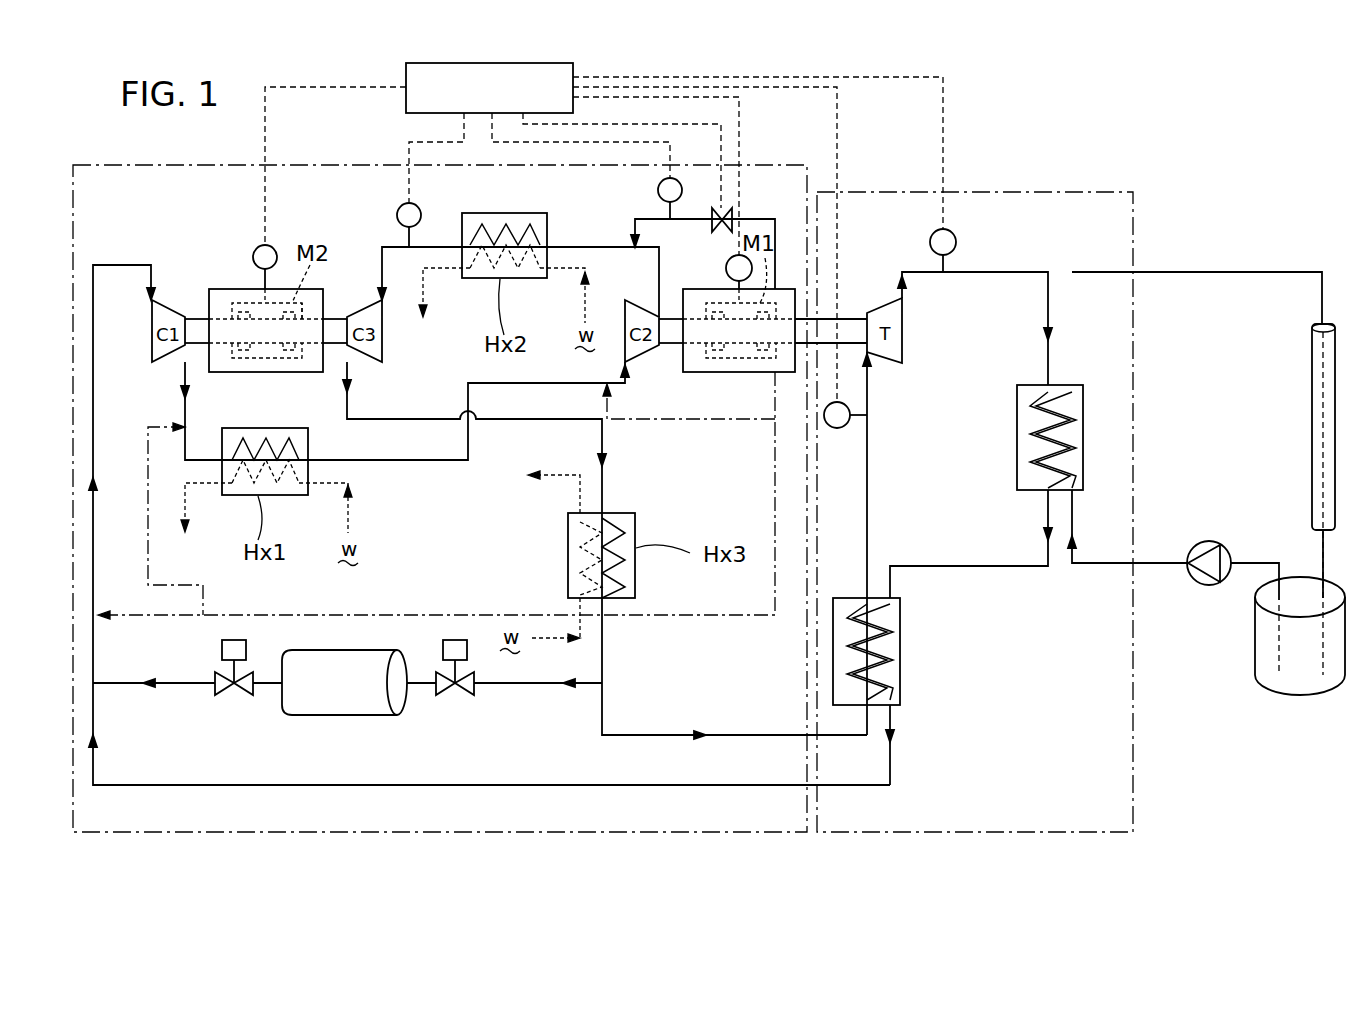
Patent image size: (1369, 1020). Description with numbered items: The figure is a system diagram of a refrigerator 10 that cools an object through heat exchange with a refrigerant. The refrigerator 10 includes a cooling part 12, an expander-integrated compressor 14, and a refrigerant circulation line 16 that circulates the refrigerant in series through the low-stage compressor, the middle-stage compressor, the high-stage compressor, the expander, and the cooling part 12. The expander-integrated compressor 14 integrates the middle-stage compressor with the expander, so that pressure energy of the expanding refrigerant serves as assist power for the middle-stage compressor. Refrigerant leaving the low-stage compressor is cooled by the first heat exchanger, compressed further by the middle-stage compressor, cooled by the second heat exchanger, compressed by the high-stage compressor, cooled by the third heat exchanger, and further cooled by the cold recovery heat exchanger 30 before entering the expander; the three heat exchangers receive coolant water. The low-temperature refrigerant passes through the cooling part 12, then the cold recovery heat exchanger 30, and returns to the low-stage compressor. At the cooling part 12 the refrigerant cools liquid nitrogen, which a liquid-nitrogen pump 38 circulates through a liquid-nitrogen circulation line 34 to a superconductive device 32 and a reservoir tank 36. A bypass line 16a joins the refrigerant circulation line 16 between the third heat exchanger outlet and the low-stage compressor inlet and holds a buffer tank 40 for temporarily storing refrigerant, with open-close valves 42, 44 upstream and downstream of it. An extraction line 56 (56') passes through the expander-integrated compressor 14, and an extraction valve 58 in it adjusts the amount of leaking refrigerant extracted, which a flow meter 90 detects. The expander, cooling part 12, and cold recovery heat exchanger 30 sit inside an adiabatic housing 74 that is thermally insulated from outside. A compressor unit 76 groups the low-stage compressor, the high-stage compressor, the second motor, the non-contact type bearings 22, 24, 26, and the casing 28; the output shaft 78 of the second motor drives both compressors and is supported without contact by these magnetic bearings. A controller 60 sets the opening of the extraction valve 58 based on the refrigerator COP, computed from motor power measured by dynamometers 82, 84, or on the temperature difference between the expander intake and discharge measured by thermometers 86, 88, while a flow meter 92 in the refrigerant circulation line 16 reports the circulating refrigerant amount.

The refrigerator 10 is at (670, 51).
The cooling part 12 is at (1017, 430).
The expander-integrated compressor 14 is at (789, 272).
The refrigerant circulation line 16 is at (411, 462).
The bypass line 16a is at (517, 686).
The non-contact type bearing 22 is at (282, 358).
The non-contact type bearing 24 is at (758, 358).
The non-contact type bearing 26 is at (503, 331).
The casing 28 is at (213, 290).
The cold recovery heat exchanger 30 is at (900, 649).
The superconductive device 32 is at (1311, 360).
The liquid-nitrogen circulation line 34 is at (1203, 272).
The reservoir tank 36 is at (1255, 634).
The liquid-nitrogen pump 38 is at (1199, 541).
The buffer tank 40 is at (331, 716).
The open-close valve 42 is at (456, 698).
The open-close valve 44 is at (235, 698).
The extraction line 56 is at (703, 228).
The extraction line 56' is at (436, 495).
The extraction valve 58 is at (735, 217).
The controller 60 is at (450, 63).
The adiabatic housing 74 is at (1056, 190).
The compressor unit 76 is at (241, 272).
The output shaft 78 is at (312, 312).
The dynamometer 82 is at (726, 270).
The dynamometer 84 is at (276, 250).
The thermometer 86 is at (838, 430).
The thermometer 88 is at (931, 240).
The flow meter 90 is at (658, 191).
The flow meter 92 is at (397, 216).